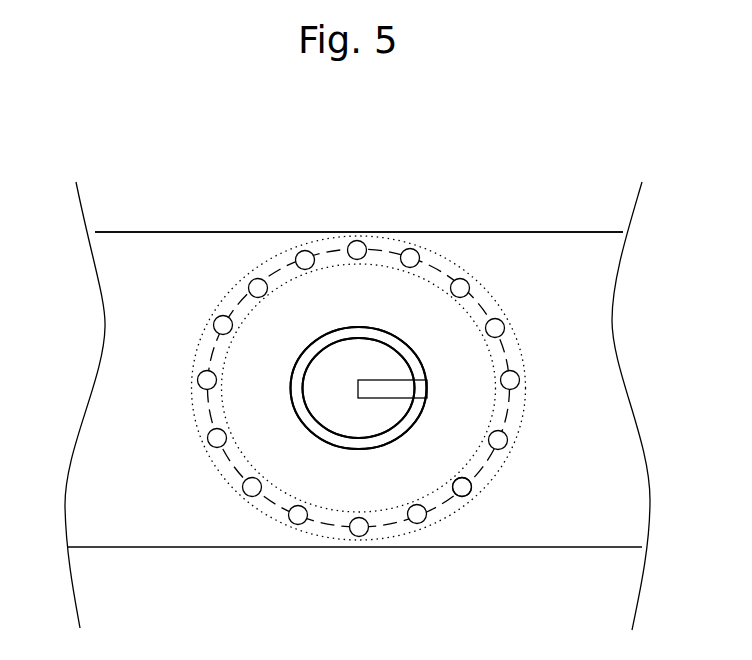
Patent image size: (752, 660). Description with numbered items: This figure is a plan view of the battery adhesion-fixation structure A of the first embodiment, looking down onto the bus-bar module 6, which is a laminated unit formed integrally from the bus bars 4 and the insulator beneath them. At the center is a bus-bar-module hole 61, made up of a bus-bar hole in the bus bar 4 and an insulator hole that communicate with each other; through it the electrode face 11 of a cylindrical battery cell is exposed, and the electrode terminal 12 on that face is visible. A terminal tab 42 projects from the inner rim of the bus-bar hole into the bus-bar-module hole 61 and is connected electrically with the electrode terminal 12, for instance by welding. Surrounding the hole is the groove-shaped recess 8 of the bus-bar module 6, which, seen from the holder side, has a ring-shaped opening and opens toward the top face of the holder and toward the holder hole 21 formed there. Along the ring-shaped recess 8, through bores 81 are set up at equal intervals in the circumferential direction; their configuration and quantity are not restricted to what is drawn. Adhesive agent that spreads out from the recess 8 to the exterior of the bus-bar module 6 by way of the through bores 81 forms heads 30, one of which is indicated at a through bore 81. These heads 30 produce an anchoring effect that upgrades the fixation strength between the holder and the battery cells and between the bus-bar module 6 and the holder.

The battery adhesion-fixation structure A is at (66, 150).
The bus bar 4 is at (355, 389).
The bus-bar module 6 is at (200, 245).
The recess 8 is at (222, 410).
The holder hole 21 is at (433, 270).
The through bore 81 is at (508, 447).
The head 30 is at (463, 488).
The electrode face 11 is at (300, 373).
The bus-bar-module hole 61 is at (347, 448).
The terminal tab 42 is at (397, 390).
The electrode terminal 12 is at (370, 425).